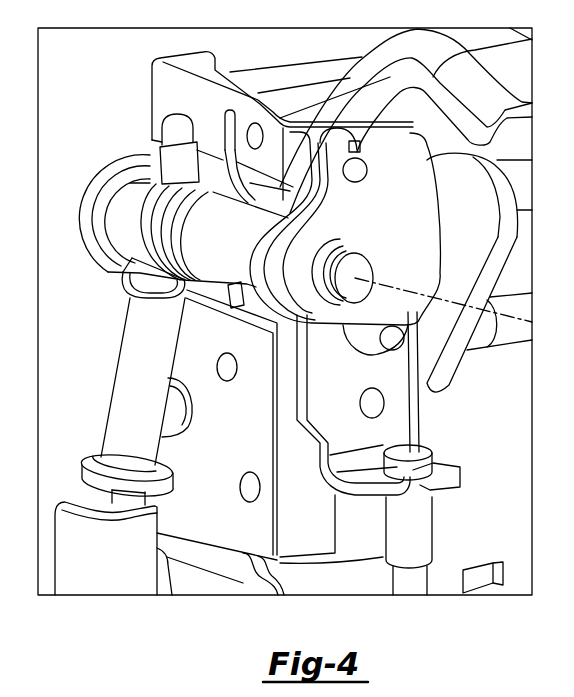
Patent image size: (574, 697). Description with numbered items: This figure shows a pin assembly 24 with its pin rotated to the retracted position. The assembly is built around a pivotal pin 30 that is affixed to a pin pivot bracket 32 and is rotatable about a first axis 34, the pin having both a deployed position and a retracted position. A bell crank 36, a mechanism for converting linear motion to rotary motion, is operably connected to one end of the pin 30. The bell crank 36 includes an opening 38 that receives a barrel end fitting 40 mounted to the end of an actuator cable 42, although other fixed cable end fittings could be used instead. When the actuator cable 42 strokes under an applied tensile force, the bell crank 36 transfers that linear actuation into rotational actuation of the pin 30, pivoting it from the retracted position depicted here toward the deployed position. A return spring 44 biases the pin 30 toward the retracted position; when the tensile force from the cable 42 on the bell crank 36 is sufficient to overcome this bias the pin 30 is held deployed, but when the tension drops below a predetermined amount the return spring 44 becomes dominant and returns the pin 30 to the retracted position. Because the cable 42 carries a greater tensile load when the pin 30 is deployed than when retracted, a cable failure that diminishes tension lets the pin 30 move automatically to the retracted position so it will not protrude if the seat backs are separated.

The pin assembly 24 is at (106, 105).
The pivotal pin 30 is at (130, 373).
The pin pivot bracket 32 is at (163, 93).
The first axis 34 is at (81, 200).
The bell crank 36 is at (405, 240).
The opening 38 is at (345, 165).
The barrel end fitting 40 is at (356, 170).
The actuator cable 42 is at (412, 426).
The return spring 44 is at (130, 259).